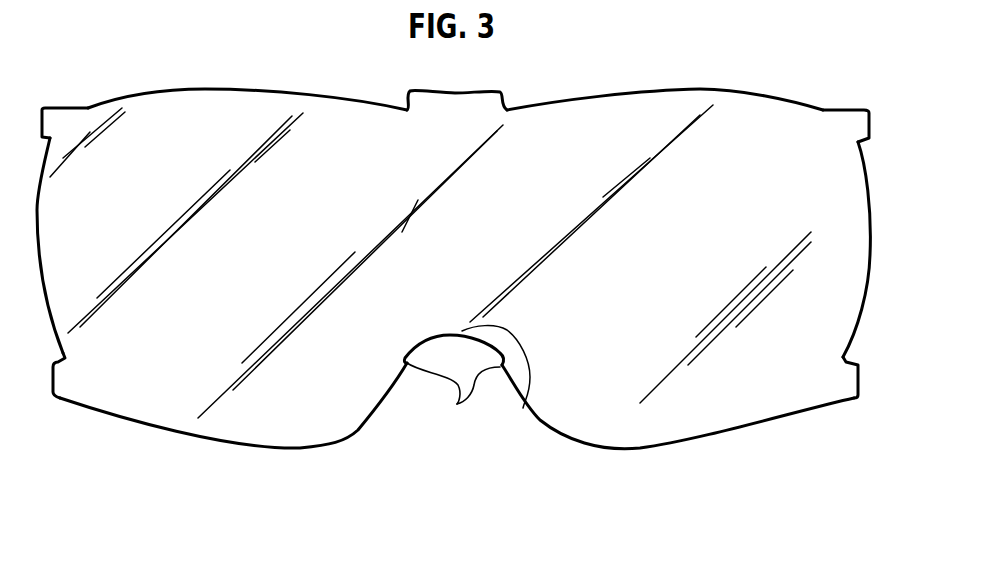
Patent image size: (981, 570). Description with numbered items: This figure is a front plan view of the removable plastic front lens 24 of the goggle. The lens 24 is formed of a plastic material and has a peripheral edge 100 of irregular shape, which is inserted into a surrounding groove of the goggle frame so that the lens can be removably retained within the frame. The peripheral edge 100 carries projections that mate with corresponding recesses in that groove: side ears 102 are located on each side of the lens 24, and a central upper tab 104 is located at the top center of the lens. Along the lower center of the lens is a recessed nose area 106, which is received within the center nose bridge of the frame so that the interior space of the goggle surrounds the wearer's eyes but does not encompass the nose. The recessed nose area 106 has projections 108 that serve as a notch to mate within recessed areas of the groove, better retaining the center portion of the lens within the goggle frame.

The peripheral edge 100 is at (723, 432).
The front lens 24 is at (656, 106).
The side ears 102 is at (48, 118).
The central upper tab 104 is at (483, 93).
The recessed nose area 106 is at (523, 408).
The projections 108 is at (458, 402).